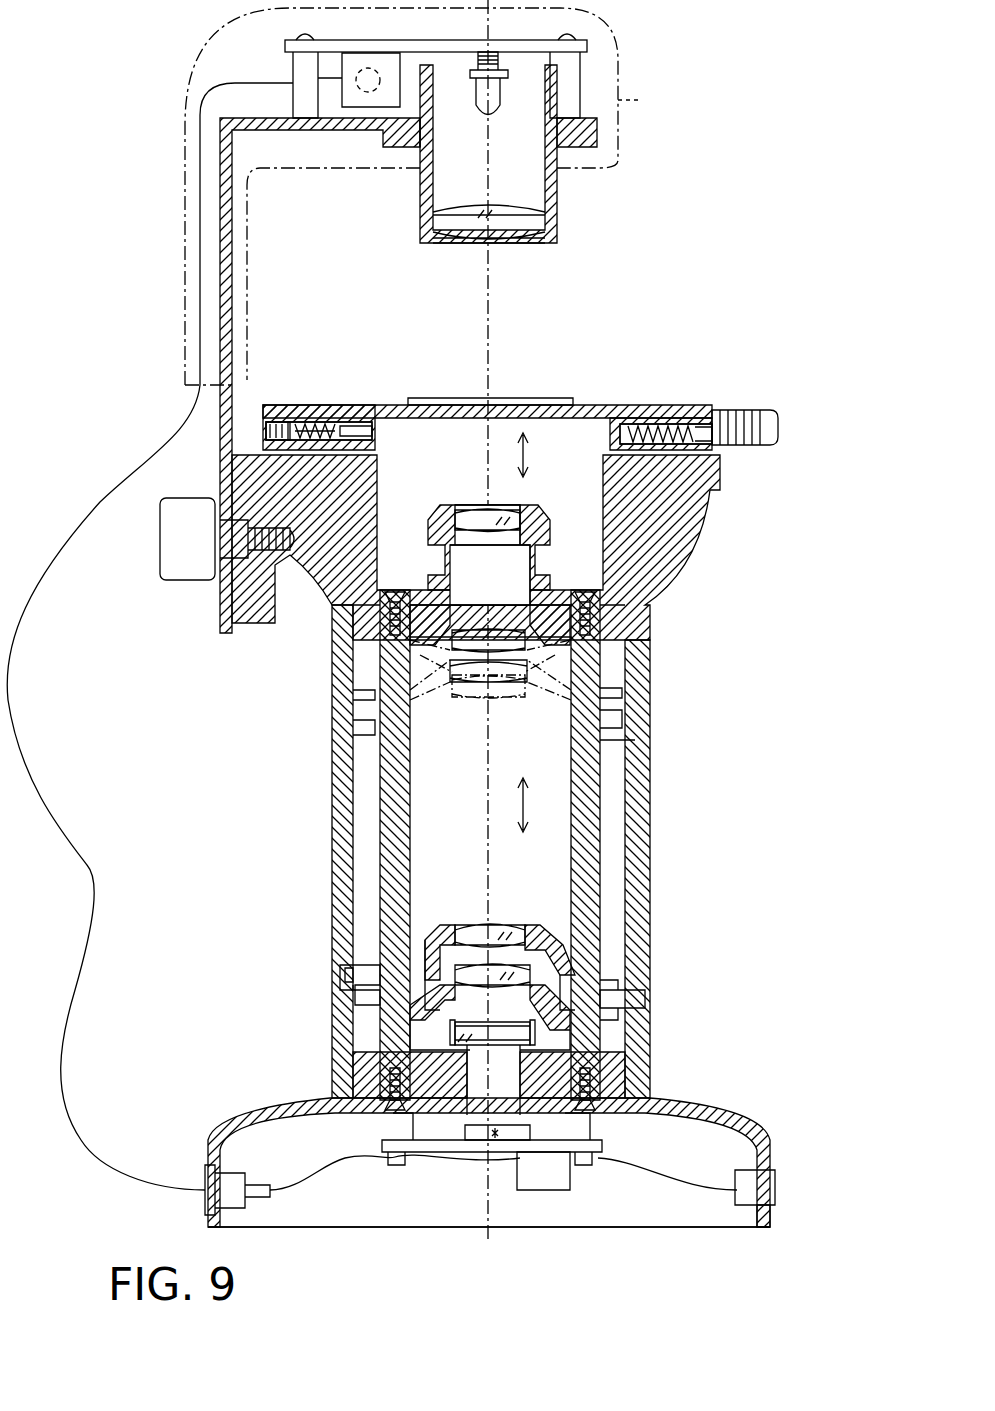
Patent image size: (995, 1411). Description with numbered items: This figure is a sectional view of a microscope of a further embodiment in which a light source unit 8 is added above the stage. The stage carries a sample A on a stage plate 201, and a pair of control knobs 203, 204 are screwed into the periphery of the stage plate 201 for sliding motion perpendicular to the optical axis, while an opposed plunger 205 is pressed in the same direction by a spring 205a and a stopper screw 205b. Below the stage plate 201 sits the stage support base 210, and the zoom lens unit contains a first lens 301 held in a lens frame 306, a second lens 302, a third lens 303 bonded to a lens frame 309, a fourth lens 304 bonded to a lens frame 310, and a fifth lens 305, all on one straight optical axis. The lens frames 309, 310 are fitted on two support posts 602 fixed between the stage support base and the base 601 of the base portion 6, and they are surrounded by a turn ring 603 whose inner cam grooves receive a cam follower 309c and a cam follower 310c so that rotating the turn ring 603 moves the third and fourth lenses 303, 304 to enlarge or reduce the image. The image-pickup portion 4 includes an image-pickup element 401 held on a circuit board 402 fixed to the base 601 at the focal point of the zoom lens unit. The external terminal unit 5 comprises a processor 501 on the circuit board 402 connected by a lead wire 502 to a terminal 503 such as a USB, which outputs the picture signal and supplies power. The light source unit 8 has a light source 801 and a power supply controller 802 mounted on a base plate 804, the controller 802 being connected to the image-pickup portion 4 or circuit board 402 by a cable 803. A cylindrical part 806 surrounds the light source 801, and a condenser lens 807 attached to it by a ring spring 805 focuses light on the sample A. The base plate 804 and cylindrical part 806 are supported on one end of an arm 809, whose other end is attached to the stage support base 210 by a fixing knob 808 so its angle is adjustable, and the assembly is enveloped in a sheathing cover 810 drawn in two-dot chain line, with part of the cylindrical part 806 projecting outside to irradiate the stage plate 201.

The light source unit 8 is at (652, 52).
The light source 801 is at (498, 118).
The power supply controller 802 is at (372, 56).
The cable 803 is at (110, 508).
The base plate 804 is at (285, 50).
The ring spring 805 is at (550, 210).
The cylindrical part 806 is at (420, 185).
The condenser lens 807 is at (512, 230).
The fixing knob 808 is at (190, 582).
The arm 809 is at (232, 270).
The sheathing cover 810 is at (640, 100).
The stage plate 201 is at (643, 405).
The control knob 203 is at (713, 404).
The control knob 204 is at (742, 410).
The plunger 205 is at (378, 442).
The spring 205a is at (322, 420).
The stopper screw 205b is at (270, 408).
The stage support base 210 is at (692, 546).
The sample A is at (453, 398).
The first lens 301 is at (468, 518).
The second lens 302 is at (545, 634).
The third lens 303 is at (515, 935).
The fourth lens 304 is at (470, 965).
The fifth lens 305 is at (545, 1040).
The lens frame 306 is at (538, 518).
The lens frame 309 is at (560, 955).
The cam follower 309c is at (350, 968).
The lens frame 310 is at (565, 990).
The cam follower 310c is at (640, 1000).
The image-pickup portion 4 is at (507, 1218).
The image-pickup element 401 is at (475, 1142).
The circuit board 402 is at (420, 1152).
The external terminal unit 5 is at (775, 1215).
The processor 501 is at (565, 1182).
The lead wire 502 is at (662, 1172).
The terminal 503 is at (768, 1185).
The base portion 6 is at (518, 1133).
The base 601 is at (768, 1130).
The support post 602 is at (395, 780).
The turn ring 603 is at (652, 738).